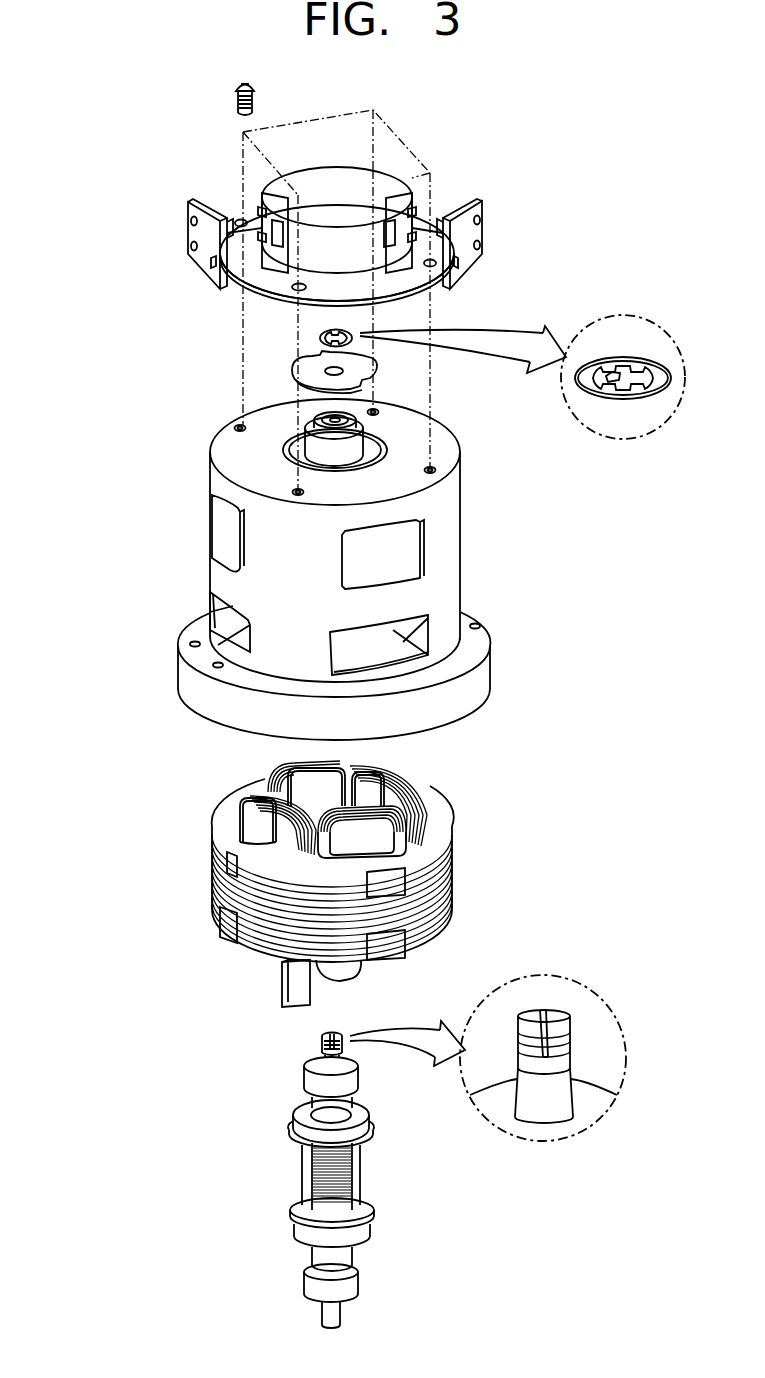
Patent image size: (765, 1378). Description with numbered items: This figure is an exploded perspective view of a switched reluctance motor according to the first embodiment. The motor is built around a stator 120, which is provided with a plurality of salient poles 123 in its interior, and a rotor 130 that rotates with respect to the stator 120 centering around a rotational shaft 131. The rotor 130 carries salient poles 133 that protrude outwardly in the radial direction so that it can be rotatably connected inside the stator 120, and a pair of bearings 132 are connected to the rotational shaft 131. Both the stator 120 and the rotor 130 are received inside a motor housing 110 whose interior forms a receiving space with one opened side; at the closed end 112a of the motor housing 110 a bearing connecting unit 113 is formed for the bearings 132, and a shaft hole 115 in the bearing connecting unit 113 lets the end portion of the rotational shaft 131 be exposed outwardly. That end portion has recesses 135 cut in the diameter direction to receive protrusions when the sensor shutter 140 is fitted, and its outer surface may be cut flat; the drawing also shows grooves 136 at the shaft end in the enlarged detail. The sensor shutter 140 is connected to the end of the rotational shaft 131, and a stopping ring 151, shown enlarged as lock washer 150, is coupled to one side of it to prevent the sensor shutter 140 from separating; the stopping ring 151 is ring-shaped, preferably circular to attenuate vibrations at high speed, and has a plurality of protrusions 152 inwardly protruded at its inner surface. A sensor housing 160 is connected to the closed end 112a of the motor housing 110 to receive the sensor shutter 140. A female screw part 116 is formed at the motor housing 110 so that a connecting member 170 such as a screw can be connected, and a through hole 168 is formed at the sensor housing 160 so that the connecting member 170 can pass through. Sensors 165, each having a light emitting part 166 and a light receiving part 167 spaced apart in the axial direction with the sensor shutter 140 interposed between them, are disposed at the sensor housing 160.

The motor housing 110 is at (316, 557).
The closed end 112a is at (225, 447).
The bearing connecting unit 113 is at (355, 445).
The shaft hole 115 is at (334, 418).
The female screw part 116 is at (238, 425).
The stator 120 is at (281, 879).
The salient poles 123 is at (243, 810).
The rotor 130 is at (266, 1181).
The rotational shaft 131 is at (320, 1258).
The bearings 132 is at (310, 1085).
The salient poles 133 is at (320, 1208).
The recesses 135 is at (548, 1011).
The shaft end grooves 136 is at (560, 1040).
The sensor shutter 140 is at (297, 362).
The lock washer 150 is at (336, 338).
The stopping ring 151 is at (633, 393).
The protrusions 152 is at (610, 383).
The sensor housing 160 is at (385, 193).
The sensors 165 is at (354, 247).
The light emitting part 166 is at (453, 263).
The light receiving part 167 is at (450, 217).
The through hole 168 is at (292, 286).
The connecting member 170 is at (233, 87).